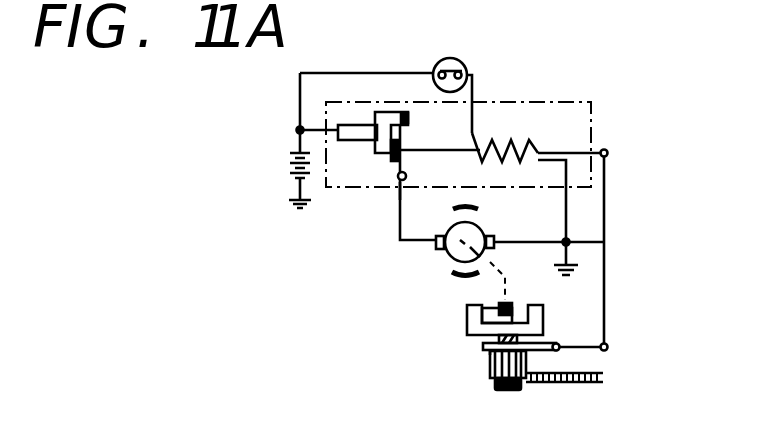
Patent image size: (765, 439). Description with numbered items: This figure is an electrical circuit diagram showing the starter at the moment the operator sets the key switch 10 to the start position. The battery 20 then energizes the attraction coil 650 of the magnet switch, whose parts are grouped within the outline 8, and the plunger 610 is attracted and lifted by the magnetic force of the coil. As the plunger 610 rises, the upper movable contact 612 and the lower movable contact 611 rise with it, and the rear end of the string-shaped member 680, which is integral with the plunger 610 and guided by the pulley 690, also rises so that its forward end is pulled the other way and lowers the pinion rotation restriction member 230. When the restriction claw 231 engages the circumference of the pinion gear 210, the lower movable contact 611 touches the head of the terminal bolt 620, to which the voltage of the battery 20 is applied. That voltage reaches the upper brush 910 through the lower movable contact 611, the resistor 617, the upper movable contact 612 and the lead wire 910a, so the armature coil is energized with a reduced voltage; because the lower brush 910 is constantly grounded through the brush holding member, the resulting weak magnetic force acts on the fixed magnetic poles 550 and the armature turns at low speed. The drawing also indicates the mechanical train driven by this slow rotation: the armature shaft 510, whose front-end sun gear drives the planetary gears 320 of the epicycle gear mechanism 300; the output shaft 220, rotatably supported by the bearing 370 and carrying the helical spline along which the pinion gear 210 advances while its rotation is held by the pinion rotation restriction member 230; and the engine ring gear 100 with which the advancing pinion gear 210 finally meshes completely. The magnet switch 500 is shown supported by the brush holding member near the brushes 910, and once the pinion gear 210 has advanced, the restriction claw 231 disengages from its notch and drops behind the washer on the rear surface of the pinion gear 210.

The control circuit 8 is at (596, 101).
The key switch 10 is at (460, 60).
The battery 20 is at (291, 169).
The ring gear 100 is at (584, 382).
The pinion gear 210 is at (527, 360).
The output shaft 220 is at (518, 390).
The pinion rotation restriction member 230 is at (484, 348).
The restriction claw 231 is at (491, 352).
The epicycle gear mechanism 300 is at (468, 312).
The planetary gears 320 is at (480, 309).
The bearing 370 is at (605, 346).
The magnet switch 500 is at (447, 254).
The armature shaft 510 is at (520, 304).
The fixed magnetic poles 550 is at (455, 275).
The plunger 610 is at (572, 153).
The lower movable contact 611 is at (404, 113).
The upper movable contact 612 is at (388, 163).
The resistor 617 is at (397, 205).
The terminal bolt 620 is at (340, 125).
The attraction coil 650 is at (513, 139).
The string-shaped member 680 is at (607, 217).
The pulley 690 is at (608, 153).
The brush 910 is at (497, 237).
The lead wire 910a is at (405, 181).